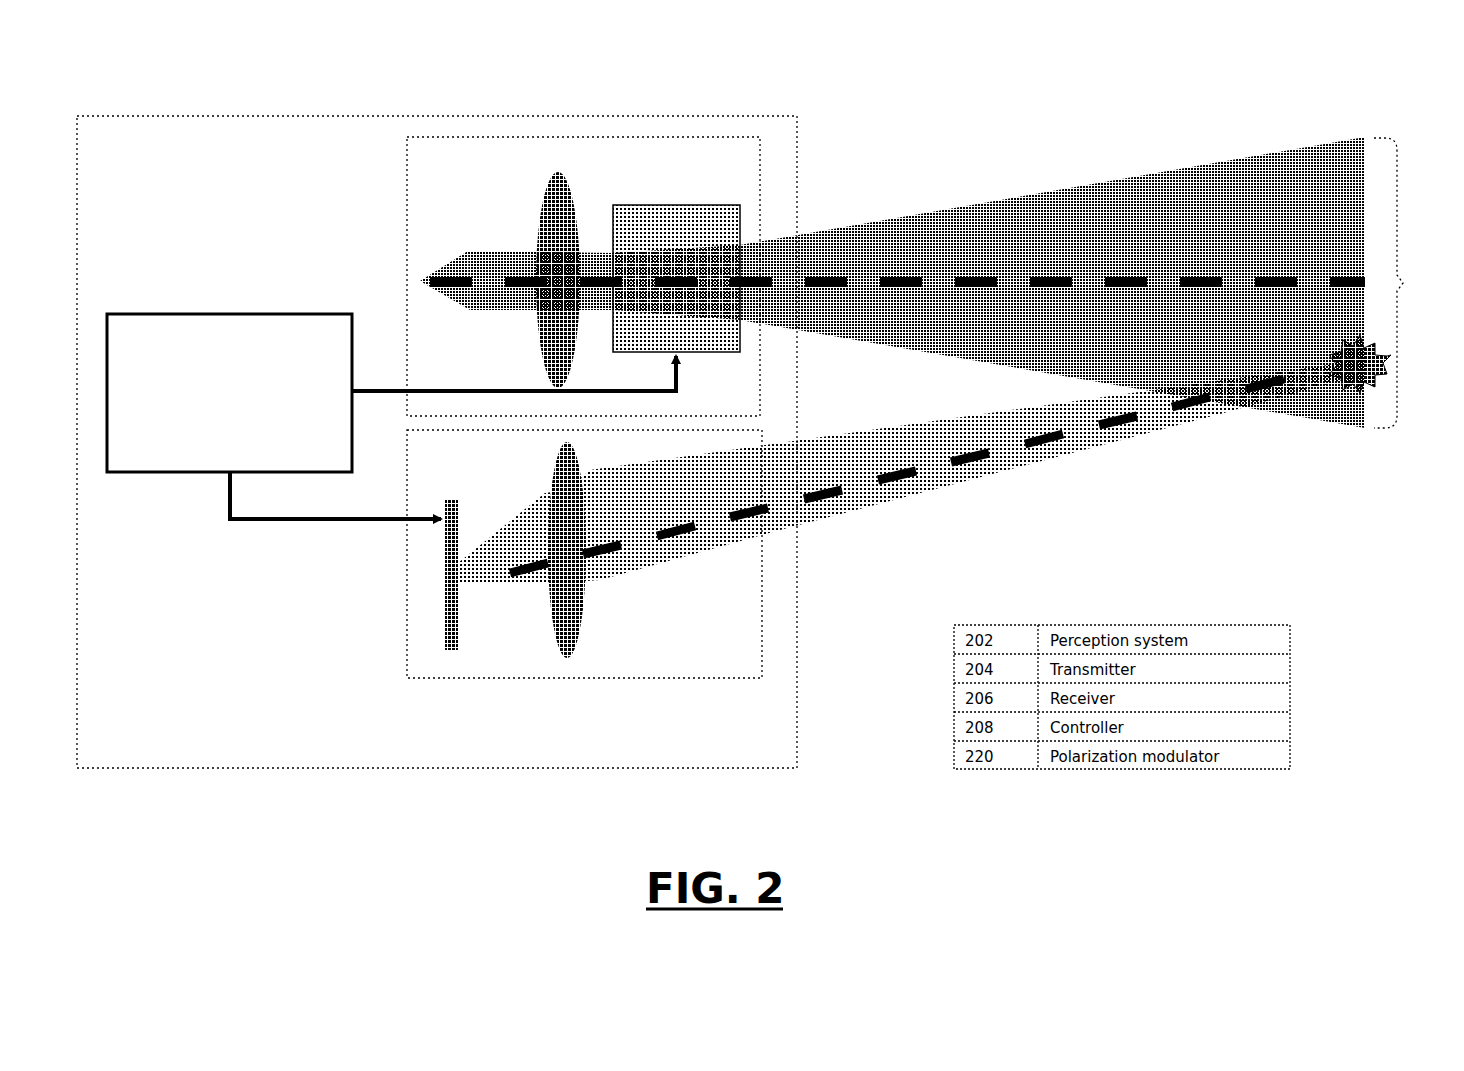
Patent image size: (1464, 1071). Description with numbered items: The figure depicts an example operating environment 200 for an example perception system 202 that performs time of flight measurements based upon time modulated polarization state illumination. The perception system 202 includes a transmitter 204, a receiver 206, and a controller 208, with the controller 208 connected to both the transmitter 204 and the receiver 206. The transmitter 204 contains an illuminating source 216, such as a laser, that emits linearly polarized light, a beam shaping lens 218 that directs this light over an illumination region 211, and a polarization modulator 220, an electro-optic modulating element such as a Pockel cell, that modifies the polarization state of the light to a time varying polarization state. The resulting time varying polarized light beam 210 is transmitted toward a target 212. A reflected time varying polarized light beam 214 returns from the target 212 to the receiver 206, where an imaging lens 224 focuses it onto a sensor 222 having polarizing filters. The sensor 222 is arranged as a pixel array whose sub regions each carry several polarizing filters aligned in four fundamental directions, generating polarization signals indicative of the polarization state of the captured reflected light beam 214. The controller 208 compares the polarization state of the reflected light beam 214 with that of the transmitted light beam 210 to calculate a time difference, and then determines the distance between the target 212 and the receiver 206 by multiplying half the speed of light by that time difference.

The operating environment 200 is at (964, 76).
The perception system 202 is at (437, 415).
The transmitter 204 is at (556, 276).
The receiver 206 is at (558, 554).
The controller 208 is at (229, 393).
The time varying polarized light beam 210 is at (897, 269).
The illumination region 211 is at (1409, 283).
The target 212 is at (1340, 415).
The reflected time varying polarized light beam 214 is at (904, 474).
The illuminating source 216 is at (445, 257).
The beam shaping lens 218 is at (538, 274).
The polarization modulator 220 is at (676, 246).
The sensor 222 is at (479, 588).
The imaging lens 224 is at (598, 550).